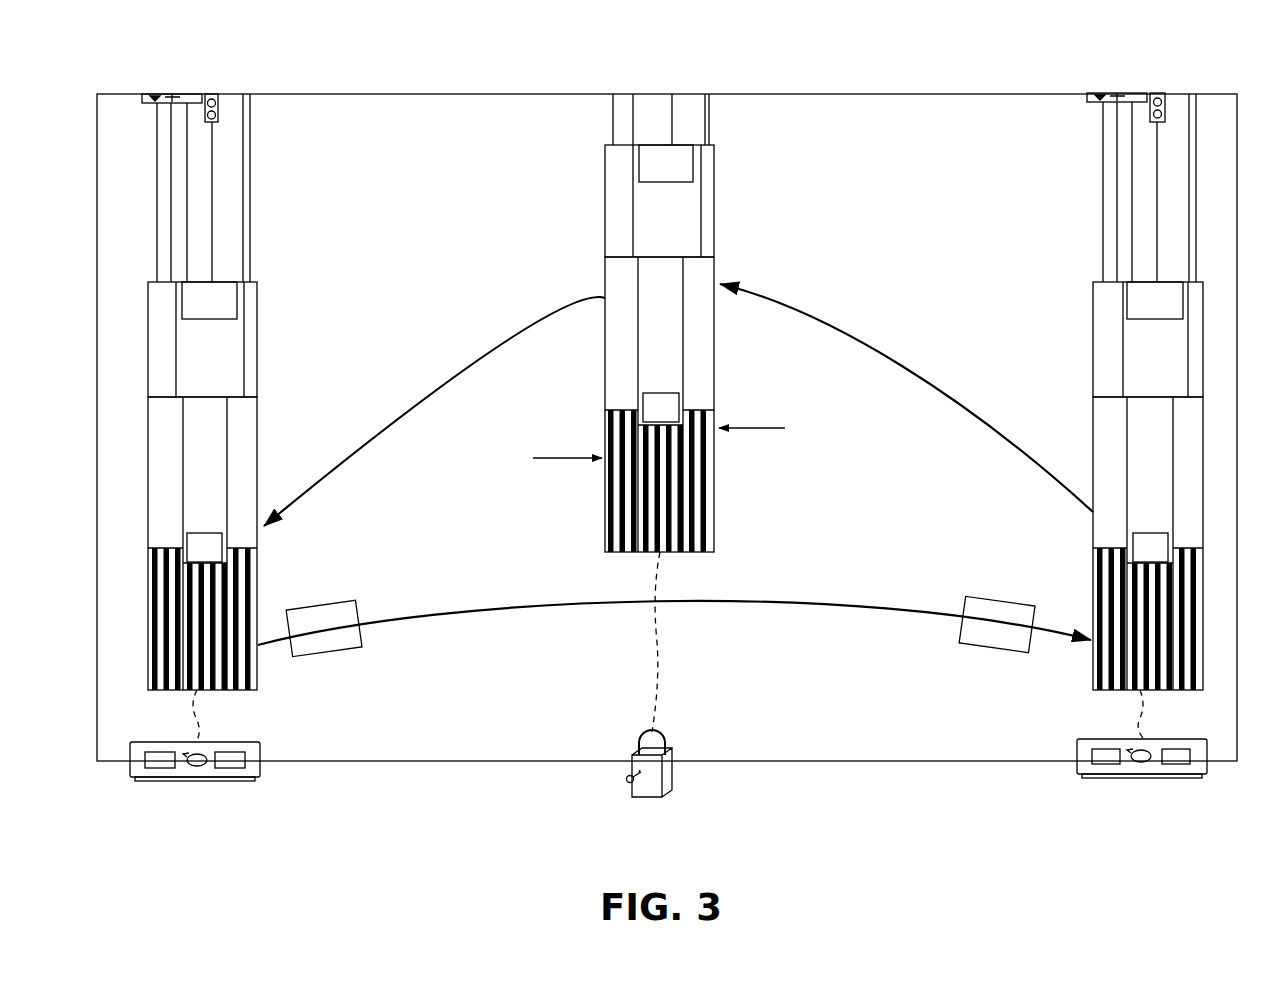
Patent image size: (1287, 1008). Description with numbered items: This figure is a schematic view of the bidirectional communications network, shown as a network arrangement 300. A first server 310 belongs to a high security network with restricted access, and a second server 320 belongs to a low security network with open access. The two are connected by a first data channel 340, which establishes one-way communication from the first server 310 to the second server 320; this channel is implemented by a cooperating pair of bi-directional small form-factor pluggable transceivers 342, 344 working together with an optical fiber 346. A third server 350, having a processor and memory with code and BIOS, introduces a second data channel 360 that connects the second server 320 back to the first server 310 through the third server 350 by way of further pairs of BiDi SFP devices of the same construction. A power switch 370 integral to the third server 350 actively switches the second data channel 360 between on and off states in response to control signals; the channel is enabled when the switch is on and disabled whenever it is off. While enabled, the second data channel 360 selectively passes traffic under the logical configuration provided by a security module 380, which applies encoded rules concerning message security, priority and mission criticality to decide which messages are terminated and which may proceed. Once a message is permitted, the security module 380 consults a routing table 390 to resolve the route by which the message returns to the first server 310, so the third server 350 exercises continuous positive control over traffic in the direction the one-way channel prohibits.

The network arrangement 300 is at (999, 79).
The first server 310 is at (264, 695).
The second server 320 is at (1085, 692).
The first data channel 340 is at (387, 627).
The bi-directional small form-factor pluggable transceiver 342 is at (334, 598).
The bi-directional small form-factor pluggable transceiver 344 is at (988, 595).
The optical fiber 346 is at (548, 665).
The third server 350 is at (601, 199).
The second data channel 360 is at (497, 344).
The power switch 370 is at (742, 827).
The security module 380 is at (516, 474).
The routing table 390 is at (836, 441).